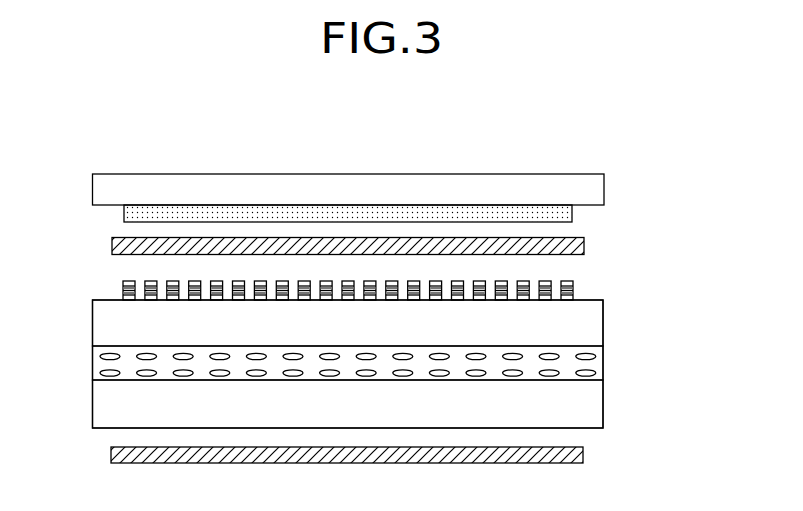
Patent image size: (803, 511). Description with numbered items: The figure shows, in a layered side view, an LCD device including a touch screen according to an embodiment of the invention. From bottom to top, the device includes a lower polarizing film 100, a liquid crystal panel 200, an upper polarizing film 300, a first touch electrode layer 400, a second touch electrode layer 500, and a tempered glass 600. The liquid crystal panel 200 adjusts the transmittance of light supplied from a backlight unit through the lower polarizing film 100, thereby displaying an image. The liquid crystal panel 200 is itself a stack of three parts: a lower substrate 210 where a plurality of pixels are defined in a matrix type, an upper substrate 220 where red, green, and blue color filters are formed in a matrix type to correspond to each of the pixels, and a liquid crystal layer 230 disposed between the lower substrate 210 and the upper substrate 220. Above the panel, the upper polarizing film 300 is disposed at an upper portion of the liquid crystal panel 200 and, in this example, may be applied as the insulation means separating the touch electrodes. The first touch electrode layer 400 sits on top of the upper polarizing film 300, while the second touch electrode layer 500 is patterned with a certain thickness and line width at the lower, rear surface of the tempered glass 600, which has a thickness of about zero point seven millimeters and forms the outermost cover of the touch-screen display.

The lower polarizing film 100 is at (583, 455).
The liquid crystal panel 200 is at (668, 326).
The lower substrate 210 is at (603, 408).
The upper substrate 220 is at (603, 327).
The liquid crystal layer 230 is at (603, 366).
The upper polarizing film 300 is at (584, 244).
The first touch electrode layer 400 is at (118, 290).
The second touch electrode layer 500 is at (118, 214).
The tempered glass 600 is at (604, 190).